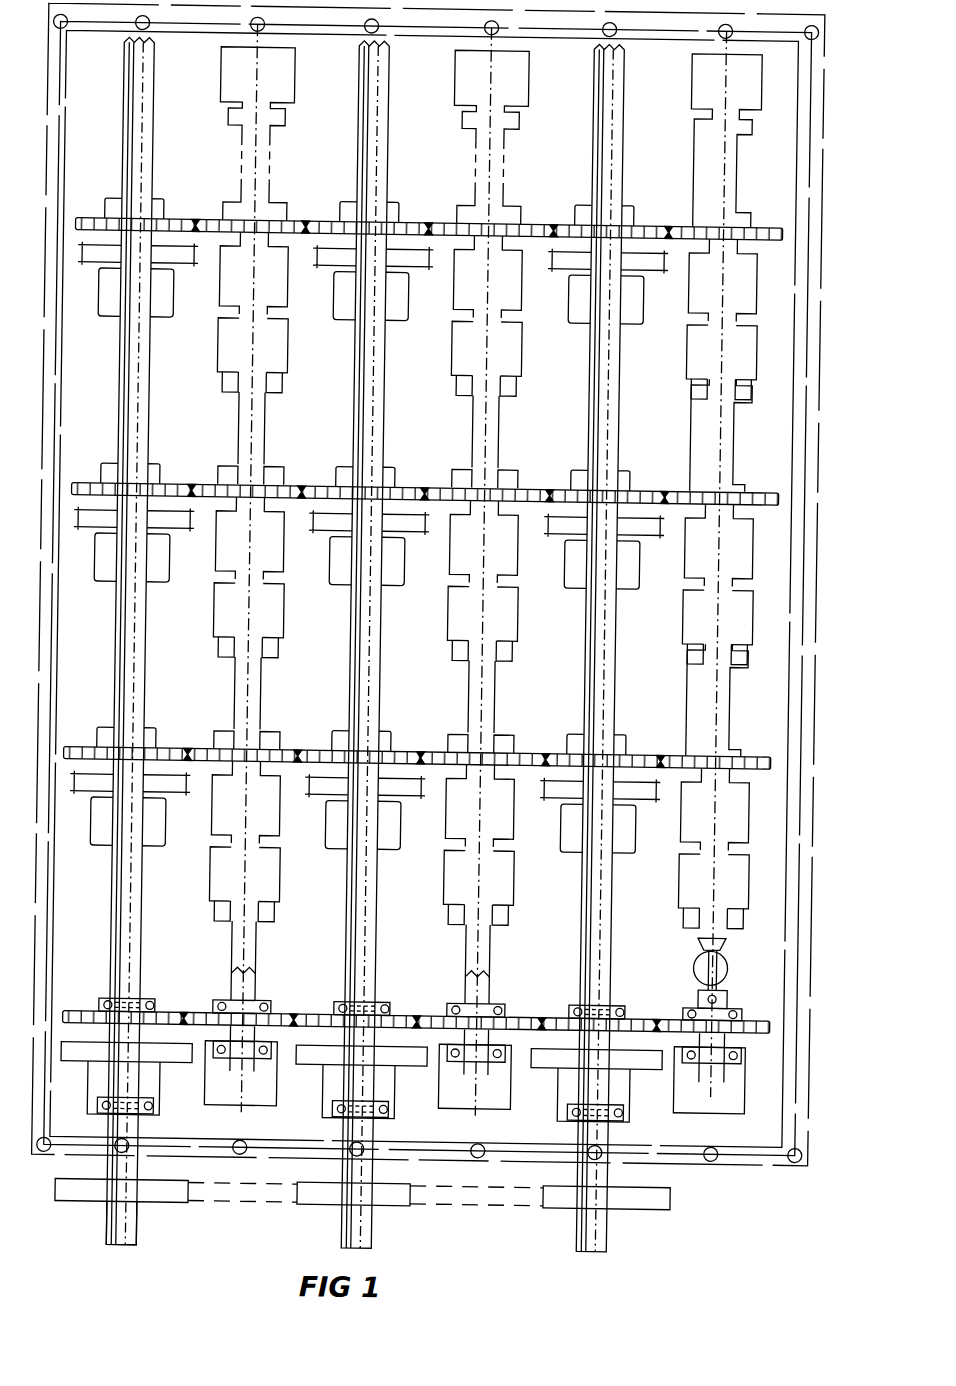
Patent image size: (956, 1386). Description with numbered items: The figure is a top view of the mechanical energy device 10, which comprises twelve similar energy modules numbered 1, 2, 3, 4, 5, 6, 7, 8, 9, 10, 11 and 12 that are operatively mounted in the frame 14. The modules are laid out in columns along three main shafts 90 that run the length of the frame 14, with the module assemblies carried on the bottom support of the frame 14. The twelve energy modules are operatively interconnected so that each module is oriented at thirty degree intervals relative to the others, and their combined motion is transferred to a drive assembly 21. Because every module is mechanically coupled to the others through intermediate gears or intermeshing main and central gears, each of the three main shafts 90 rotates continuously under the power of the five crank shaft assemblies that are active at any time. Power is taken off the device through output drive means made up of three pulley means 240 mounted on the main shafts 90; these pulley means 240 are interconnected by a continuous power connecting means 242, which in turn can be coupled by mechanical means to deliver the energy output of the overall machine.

The mechanical energy device 10 is at (454, 652).
The frame 14 is at (791, 1113).
The drive assembly 21 is at (208, 1250).
The main shafts 90 is at (116, 920).
The pulley means 240 is at (557, 1208).
The continuous power connecting means 242 is at (682, 79).
The energy module 1 is at (137, 280).
The energy module 2 is at (133, 545).
The energy module 3 is at (129, 809).
The energy module 4 is at (126, 1057).
The energy module 5 is at (361, 1060).
The energy module 6 is at (364, 812).
The energy module 7 is at (369, 548).
The energy module 8 is at (372, 283).
The energy module 9 is at (607, 287).
The energy module 11 is at (599, 816).
The energy module 12 is at (596, 1065).